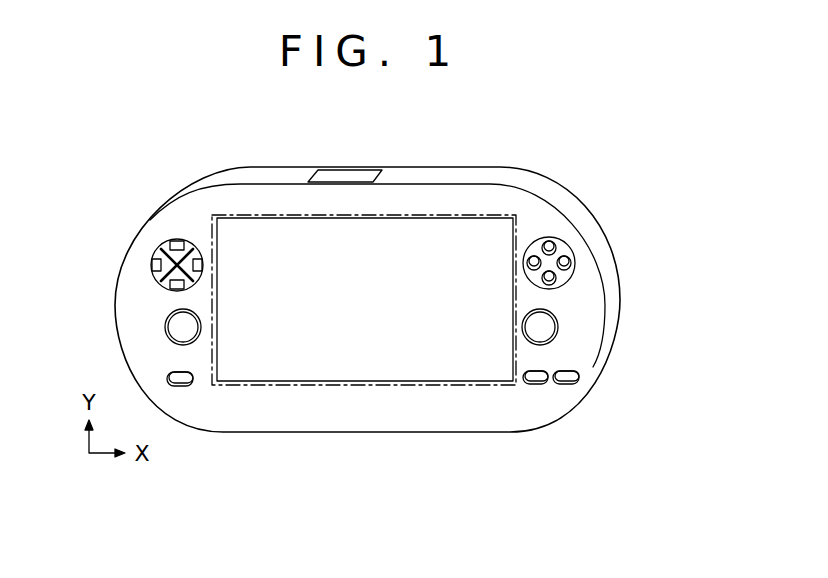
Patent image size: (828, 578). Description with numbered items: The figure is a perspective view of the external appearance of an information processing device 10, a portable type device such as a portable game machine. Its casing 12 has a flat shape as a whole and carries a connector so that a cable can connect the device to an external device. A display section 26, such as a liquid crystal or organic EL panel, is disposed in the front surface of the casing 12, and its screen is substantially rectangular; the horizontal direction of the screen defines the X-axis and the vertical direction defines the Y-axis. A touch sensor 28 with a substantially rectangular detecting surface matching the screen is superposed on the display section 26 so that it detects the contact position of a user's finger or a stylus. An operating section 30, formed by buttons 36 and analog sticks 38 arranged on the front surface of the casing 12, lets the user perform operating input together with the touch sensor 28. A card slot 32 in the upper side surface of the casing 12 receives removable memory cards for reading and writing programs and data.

The information processing device 10 is at (352, 478).
The casing 12 is at (484, 420).
The display section 26 is at (420, 217).
The touch sensor 28 is at (242, 386).
The operating section 30 is at (73, 249).
The card slot 32 is at (345, 169).
The buttons 36 is at (161, 284).
The analog sticks 38 is at (166, 322).